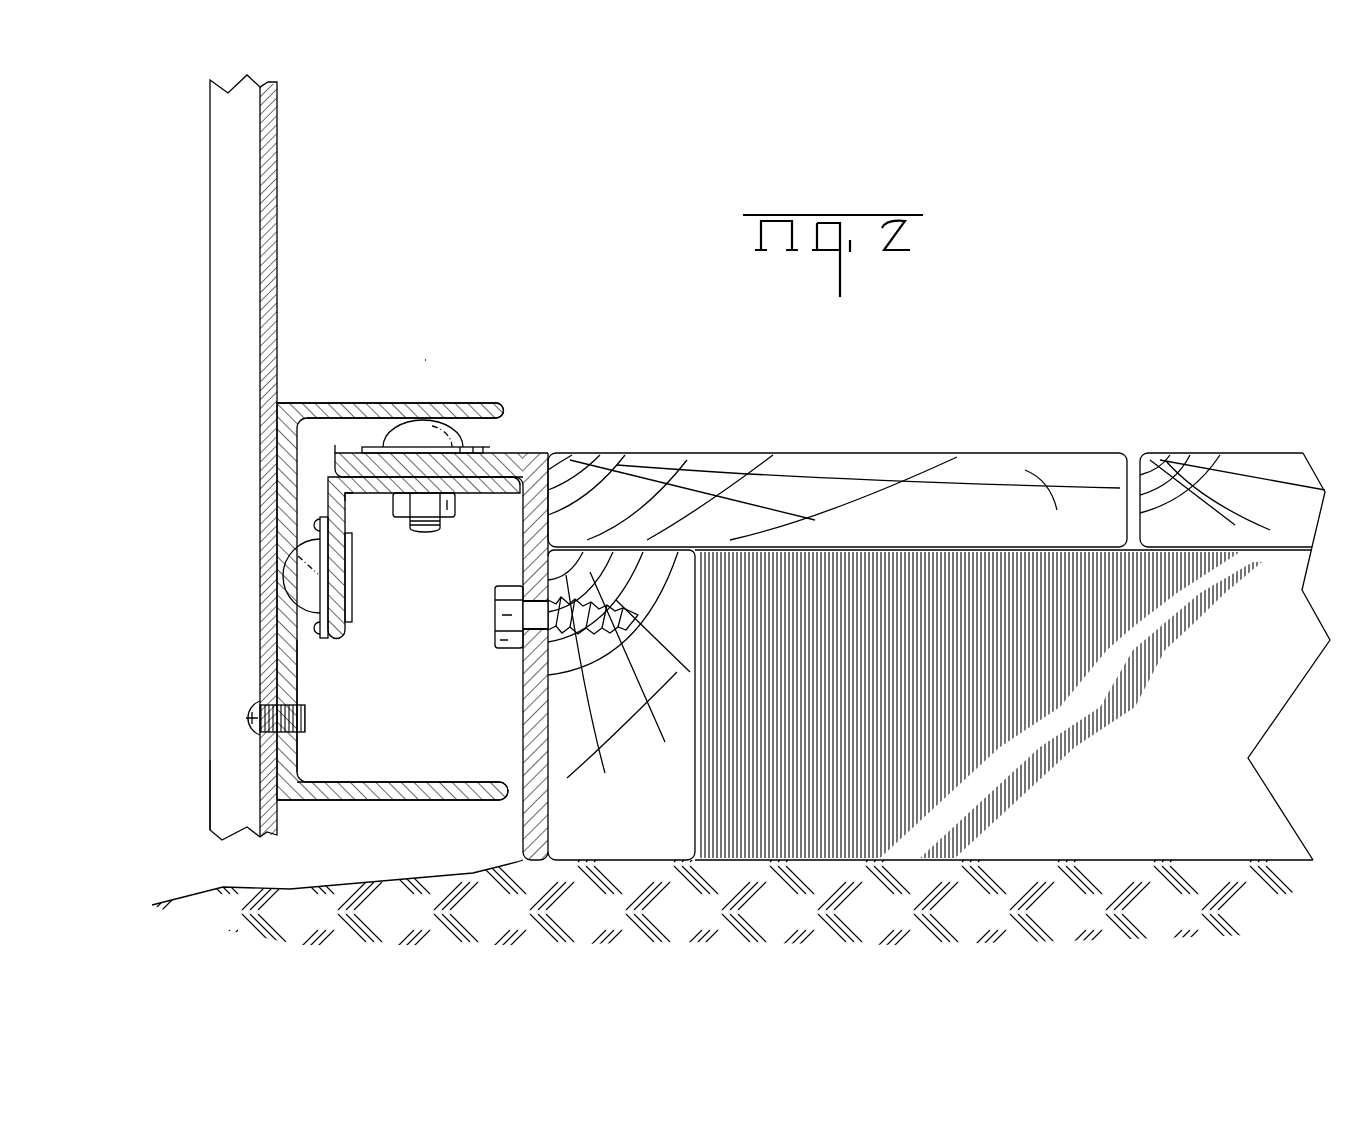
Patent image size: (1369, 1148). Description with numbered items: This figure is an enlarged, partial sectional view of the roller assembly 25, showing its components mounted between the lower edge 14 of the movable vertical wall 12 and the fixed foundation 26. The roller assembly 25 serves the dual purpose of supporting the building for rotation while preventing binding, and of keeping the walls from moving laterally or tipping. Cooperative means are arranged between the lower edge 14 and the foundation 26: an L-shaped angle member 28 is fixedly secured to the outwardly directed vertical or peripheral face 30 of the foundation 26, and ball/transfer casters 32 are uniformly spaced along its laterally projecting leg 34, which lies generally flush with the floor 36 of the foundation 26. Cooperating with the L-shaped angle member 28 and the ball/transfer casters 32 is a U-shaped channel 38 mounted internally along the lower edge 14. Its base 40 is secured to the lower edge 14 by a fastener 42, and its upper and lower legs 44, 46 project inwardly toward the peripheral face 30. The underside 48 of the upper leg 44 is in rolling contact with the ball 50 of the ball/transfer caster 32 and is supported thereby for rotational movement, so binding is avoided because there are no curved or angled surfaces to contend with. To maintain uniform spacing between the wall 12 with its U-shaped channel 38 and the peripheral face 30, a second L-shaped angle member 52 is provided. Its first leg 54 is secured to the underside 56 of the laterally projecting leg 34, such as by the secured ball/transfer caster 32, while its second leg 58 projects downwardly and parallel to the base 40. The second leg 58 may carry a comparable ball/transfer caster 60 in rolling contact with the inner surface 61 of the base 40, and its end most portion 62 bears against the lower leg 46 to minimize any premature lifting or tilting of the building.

The wall 12 is at (210, 318).
The lower edge 14 is at (210, 815).
The roller assembly 25 is at (430, 358).
The foundation 26 is at (817, 453).
The L-shaped angle member 28 is at (537, 453).
The peripheral face 30 is at (548, 455).
The ball/transfer caster 32 is at (487, 443).
The laterally projecting leg 34 is at (335, 453).
The floor 36 is at (968, 453).
The U-shaped channel 38 is at (392, 604).
The base 40 is at (297, 752).
The fastener 42 is at (243, 714).
The upper leg 44 is at (397, 412).
The lower leg 46 is at (435, 800).
The underside 48 is at (480, 447).
The ball 50 is at (397, 443).
The second L-shaped angle member 52 is at (424, 558).
The first leg 54 is at (467, 487).
The underside 56 is at (498, 480).
The second leg 58 is at (353, 517).
The ball/transfer caster 60 is at (310, 575).
The inner surface 61 is at (297, 652).
The end most portion 62 is at (342, 645).